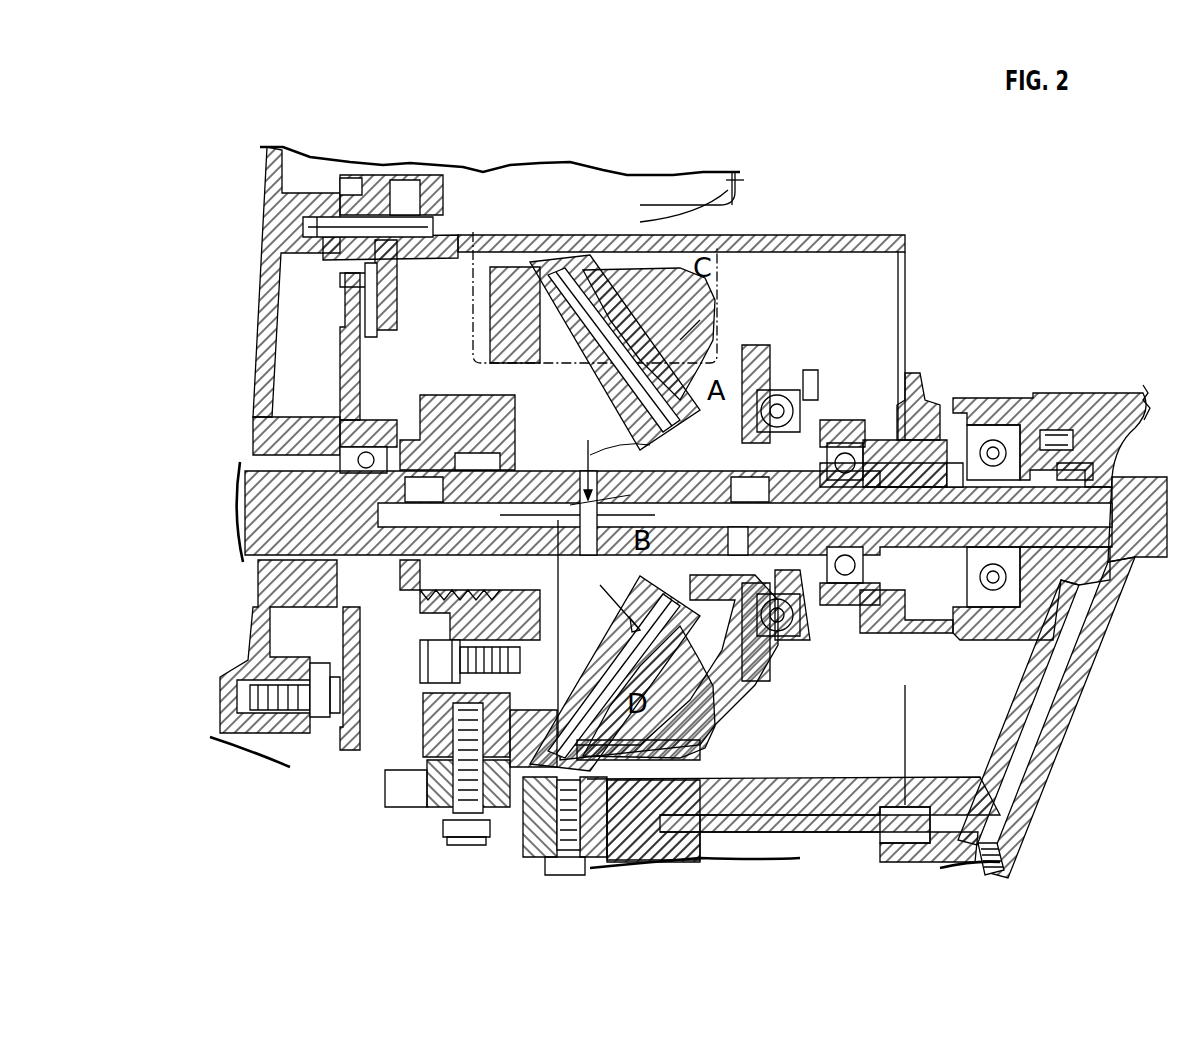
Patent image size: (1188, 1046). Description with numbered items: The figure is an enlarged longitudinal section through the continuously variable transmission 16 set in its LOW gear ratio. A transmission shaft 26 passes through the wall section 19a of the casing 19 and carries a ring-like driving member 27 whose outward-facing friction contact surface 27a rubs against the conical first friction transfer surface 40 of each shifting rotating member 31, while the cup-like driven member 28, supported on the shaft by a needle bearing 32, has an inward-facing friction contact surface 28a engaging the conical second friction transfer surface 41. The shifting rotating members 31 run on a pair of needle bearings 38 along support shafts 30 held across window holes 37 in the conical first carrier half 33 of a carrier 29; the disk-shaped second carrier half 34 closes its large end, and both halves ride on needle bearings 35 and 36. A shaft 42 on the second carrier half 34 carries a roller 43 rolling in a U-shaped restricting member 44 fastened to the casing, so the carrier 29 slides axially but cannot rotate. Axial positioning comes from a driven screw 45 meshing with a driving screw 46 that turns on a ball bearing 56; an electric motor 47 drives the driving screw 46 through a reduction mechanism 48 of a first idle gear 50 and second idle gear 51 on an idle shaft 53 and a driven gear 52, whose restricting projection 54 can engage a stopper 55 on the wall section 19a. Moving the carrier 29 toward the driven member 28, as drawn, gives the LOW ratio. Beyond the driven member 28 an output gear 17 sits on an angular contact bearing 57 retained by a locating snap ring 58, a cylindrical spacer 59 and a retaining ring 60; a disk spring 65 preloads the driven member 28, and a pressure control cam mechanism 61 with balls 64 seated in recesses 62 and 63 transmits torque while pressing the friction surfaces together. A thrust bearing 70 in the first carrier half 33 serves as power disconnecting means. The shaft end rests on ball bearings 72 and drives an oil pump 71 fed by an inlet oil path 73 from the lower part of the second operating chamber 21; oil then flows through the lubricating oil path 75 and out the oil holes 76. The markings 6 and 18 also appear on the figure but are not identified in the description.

The differential gear mechanism 6 is at (713, 301).
The continuously variable transmission 16 is at (681, 504).
The output gear 17 is at (915, 605).
The mounting flange 18 is at (927, 390).
The casing 19 is at (745, 850).
The wall section 19a is at (262, 350).
The second operating chamber 21 is at (869, 745).
The transmission shaft 26 is at (252, 487).
The driving member 27 is at (442, 405).
The friction contact surface 27a is at (540, 345).
The driven member 28 is at (720, 290).
The friction contact surface 28a is at (665, 760).
The carrier 29 is at (643, 117).
The support shafts 30 is at (630, 290).
The shifting rotating members 31 is at (700, 320).
The needle bearing 32 is at (845, 440).
The first carrier half 33 is at (560, 275).
The second carrier half 34 is at (520, 265).
The needle bearing 35 is at (731, 478).
The needle bearing 36 is at (405, 478).
The window holes 37 is at (525, 325).
The needle bearings 38 is at (651, 820).
The first friction transfer surface 40 is at (558, 520).
The second friction transfer surface 41 is at (744, 185).
The shaft 42 is at (468, 808).
The roller 43 is at (430, 787).
The restricting member 44 is at (540, 850).
The driven screw 45 is at (435, 620).
The driving screw 46 is at (392, 415).
The electric motor 47 is at (712, 175).
The reduction mechanism 48 is at (332, 275).
The first idle gear 50 is at (400, 178).
The second idle gear 51 is at (352, 178).
The driven gear 52 is at (350, 770).
The idle shaft 53 is at (300, 195).
The restricting projection 54 is at (343, 340).
The stopper 55 is at (330, 722).
The ball bearing 56 is at (347, 395).
The angular contact bearing 57 is at (901, 749).
The locating snap ring 58 is at (835, 605).
The cylindrical spacer 59 is at (890, 460).
The retaining ring 60 is at (948, 600).
The pressure control cam mechanism 61 is at (815, 375).
The recesses 62 is at (775, 400).
The recesses 63 is at (812, 395).
The balls 64 is at (787, 385).
The disk spring 65 is at (800, 640).
The thrust bearing 70 is at (738, 685).
The oil pump 71 is at (1087, 455).
The ball bearings 72 is at (995, 445).
The inlet oil path 73 is at (1045, 703).
The lubricating oil path 75 is at (1115, 560).
The oil holes 76 is at (735, 540).